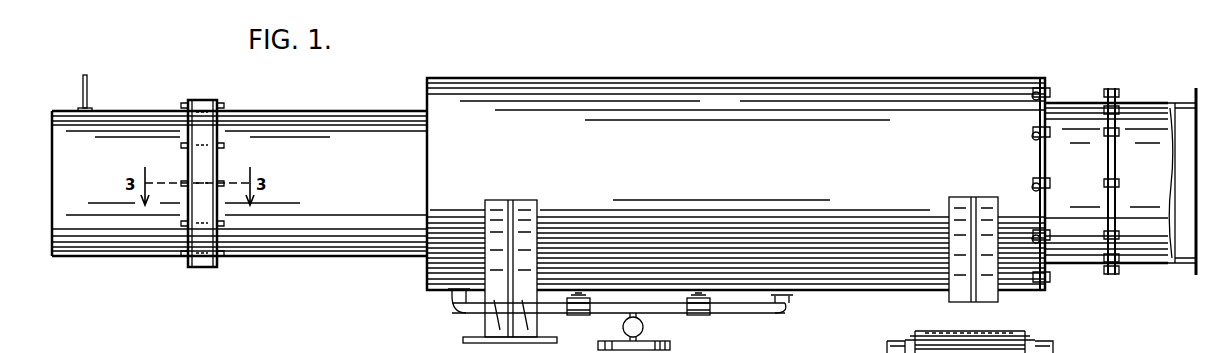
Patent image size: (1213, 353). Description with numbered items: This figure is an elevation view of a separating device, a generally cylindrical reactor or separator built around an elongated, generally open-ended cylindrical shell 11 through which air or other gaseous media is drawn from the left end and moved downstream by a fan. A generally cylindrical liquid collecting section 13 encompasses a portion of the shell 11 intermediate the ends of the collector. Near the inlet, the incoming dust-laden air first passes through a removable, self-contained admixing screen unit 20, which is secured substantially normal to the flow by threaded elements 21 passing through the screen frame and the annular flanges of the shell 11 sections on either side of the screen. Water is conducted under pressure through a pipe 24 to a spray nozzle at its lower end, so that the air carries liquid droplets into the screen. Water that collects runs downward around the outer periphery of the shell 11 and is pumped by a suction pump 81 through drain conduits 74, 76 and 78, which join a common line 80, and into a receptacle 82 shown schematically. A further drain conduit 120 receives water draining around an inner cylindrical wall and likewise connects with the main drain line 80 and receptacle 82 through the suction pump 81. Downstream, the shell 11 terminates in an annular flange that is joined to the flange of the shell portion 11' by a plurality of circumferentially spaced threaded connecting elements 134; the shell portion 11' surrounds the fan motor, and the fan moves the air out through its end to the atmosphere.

The cylindrical shell 11 is at (239, 197).
The shell portion 11' is at (1120, 175).
The liquid collecting section 13 is at (753, 78).
The screen unit 20 is at (199, 268).
The threaded elements 21 is at (224, 143).
The pipe 24 is at (88, 91).
The drain conduit 74 is at (449, 300).
The drain conduit 76 is at (590, 312).
The drain conduit 78 is at (705, 315).
The common line 80 is at (555, 313).
The suction pump 81 is at (643, 327).
The receptacle 82 is at (671, 347).
The drain conduit 120 is at (790, 303).
The threaded connecting elements 134 is at (1050, 235).